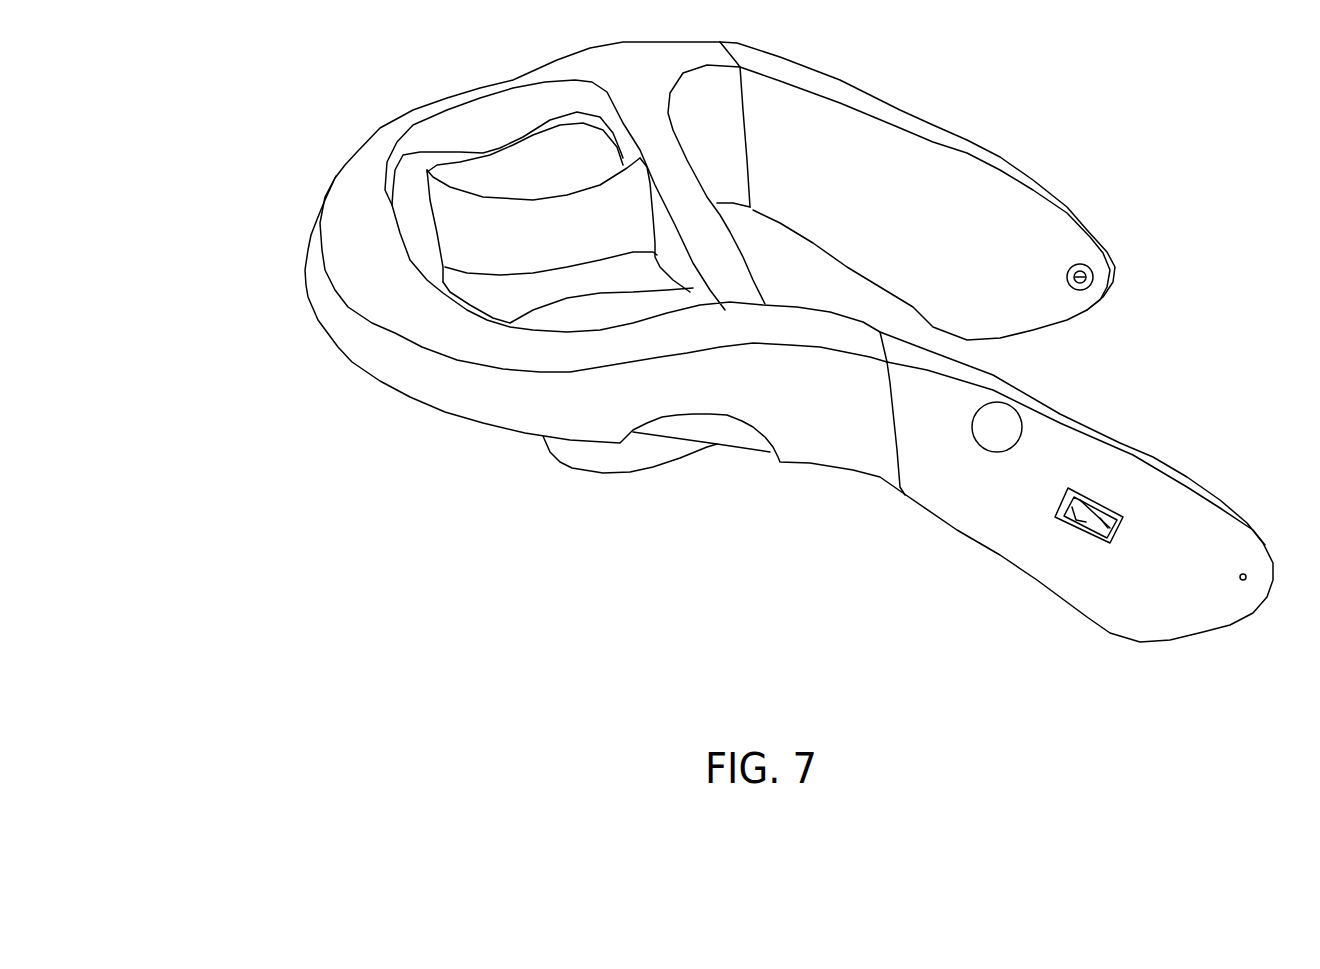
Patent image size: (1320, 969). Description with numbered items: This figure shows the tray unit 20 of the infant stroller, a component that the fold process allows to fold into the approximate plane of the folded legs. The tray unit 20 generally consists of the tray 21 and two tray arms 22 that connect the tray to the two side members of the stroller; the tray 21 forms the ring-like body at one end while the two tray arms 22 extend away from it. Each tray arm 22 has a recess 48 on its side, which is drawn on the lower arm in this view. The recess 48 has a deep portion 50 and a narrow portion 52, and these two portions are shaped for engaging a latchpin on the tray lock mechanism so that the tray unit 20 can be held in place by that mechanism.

The tray unit 20 is at (323, 117).
The tray 21 is at (358, 352).
The tray arms 22 is at (977, 157).
The recess 48 is at (1097, 503).
The deep portion 50 is at (1077, 530).
The narrow portion 52 is at (1110, 545).